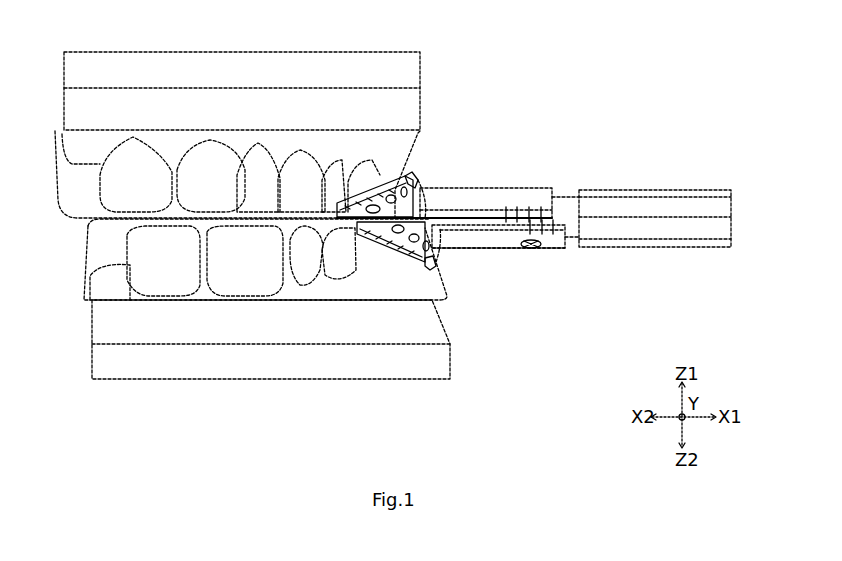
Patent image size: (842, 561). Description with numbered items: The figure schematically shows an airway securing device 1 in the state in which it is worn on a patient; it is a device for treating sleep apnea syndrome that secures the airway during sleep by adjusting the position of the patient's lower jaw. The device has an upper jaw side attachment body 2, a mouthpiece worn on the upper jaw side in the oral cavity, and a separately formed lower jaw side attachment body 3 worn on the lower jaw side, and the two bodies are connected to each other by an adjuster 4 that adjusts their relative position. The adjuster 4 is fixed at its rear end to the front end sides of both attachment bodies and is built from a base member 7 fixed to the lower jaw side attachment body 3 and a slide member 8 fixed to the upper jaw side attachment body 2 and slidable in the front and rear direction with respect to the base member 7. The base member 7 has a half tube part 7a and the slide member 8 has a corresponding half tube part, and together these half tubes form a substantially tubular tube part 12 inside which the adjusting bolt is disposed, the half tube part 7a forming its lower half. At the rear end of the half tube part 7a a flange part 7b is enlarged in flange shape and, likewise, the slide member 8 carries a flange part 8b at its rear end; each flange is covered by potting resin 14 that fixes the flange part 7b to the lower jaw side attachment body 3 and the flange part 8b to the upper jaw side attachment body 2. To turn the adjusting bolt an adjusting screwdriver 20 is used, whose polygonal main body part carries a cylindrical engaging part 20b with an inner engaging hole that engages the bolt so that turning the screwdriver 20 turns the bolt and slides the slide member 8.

The airway securing device 1 is at (381, 133).
The upper jaw side attachment body 2 is at (212, 130).
The lower jaw side attachment body 3 is at (210, 300).
The adjuster 4 is at (485, 188).
The base member 7 is at (505, 257).
The half tube part 7a is at (552, 250).
The flange part 7b is at (412, 262).
The slide member 8 is at (492, 166).
The flange part 8b is at (377, 185).
The tube part 12 is at (486, 250).
The potting resin 14 is at (427, 170).
The adjusting screwdriver 20 is at (655, 195).
The engaging part 20b is at (566, 195).